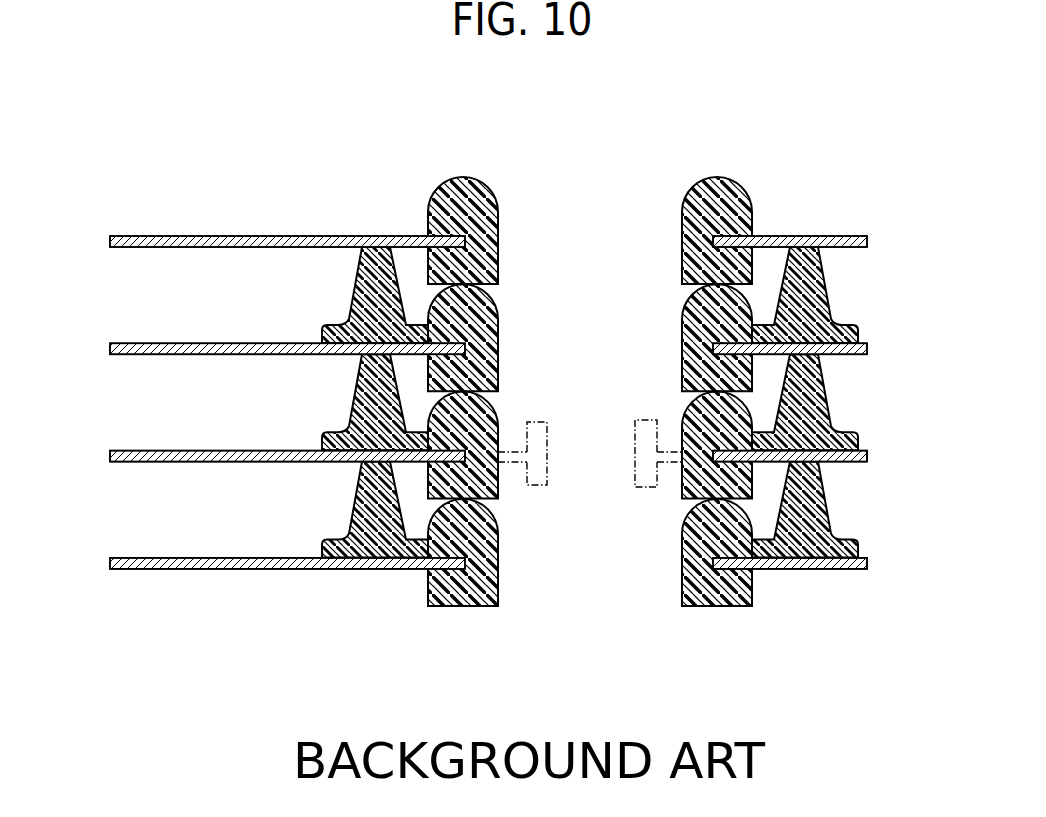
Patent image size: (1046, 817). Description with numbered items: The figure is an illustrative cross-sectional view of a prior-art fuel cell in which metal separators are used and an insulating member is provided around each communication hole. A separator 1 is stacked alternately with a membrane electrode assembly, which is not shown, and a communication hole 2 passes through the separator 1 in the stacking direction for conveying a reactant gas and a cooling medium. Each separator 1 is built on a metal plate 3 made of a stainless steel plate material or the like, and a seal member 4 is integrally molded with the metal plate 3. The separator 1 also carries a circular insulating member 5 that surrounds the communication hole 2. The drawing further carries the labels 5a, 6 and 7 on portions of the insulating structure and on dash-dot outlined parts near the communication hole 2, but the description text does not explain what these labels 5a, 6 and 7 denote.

The separator 1 is at (352, 390).
The communication hole 2 is at (740, 394).
The metal plate 3 is at (305, 236).
The seal member 4 is at (820, 288).
The insulating member 5 is at (720, 185).
The curved guide portion 5a is at (693, 293).
The housing 6 is at (692, 403).
The positioning portion 7 is at (538, 422).